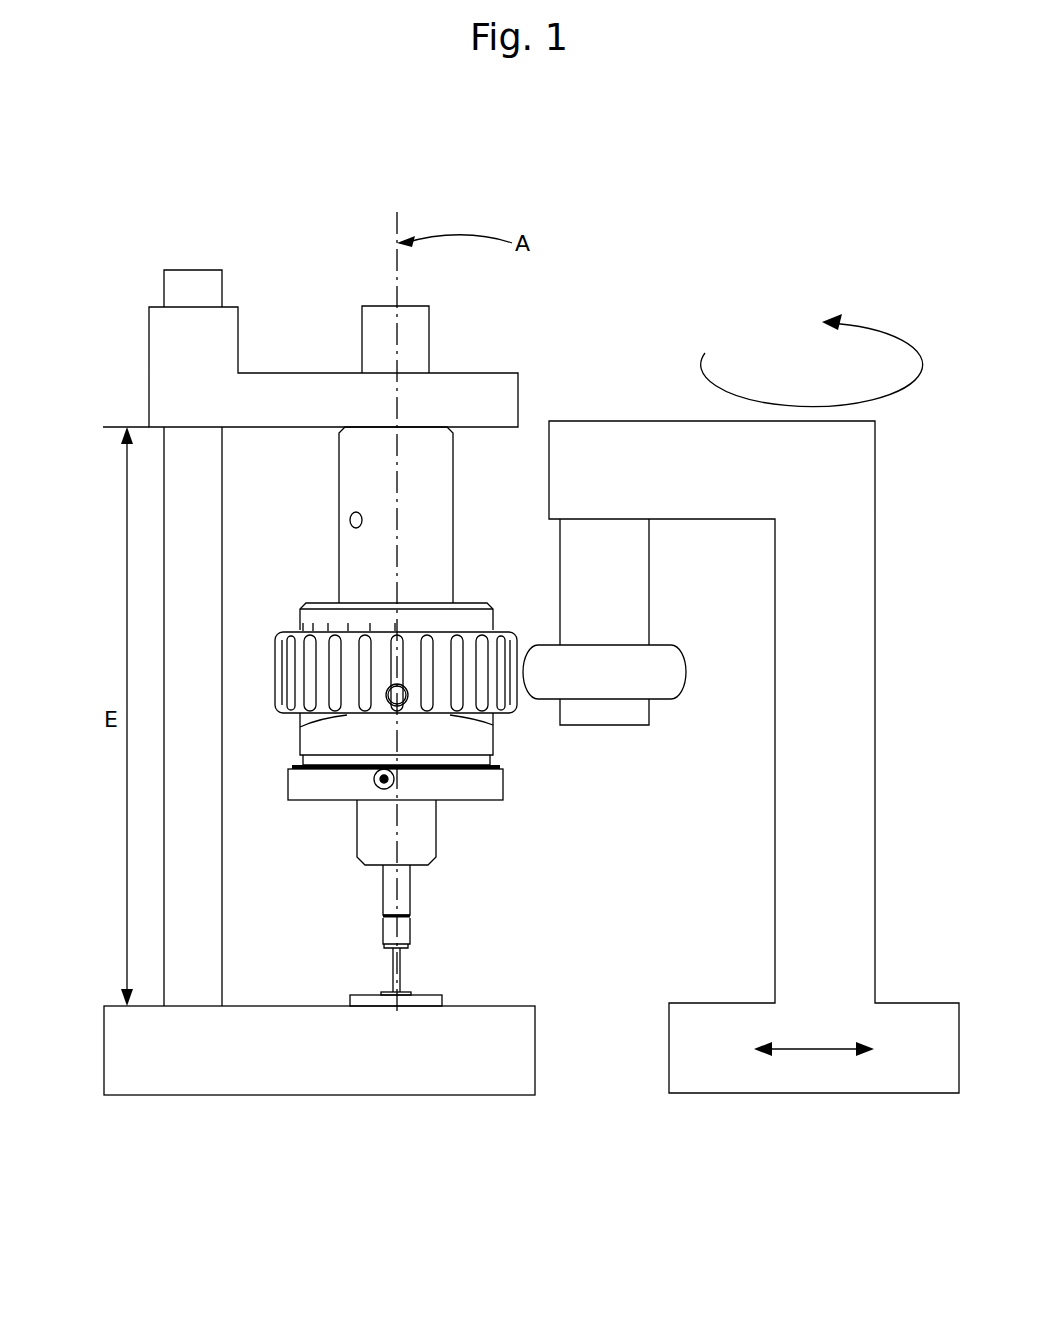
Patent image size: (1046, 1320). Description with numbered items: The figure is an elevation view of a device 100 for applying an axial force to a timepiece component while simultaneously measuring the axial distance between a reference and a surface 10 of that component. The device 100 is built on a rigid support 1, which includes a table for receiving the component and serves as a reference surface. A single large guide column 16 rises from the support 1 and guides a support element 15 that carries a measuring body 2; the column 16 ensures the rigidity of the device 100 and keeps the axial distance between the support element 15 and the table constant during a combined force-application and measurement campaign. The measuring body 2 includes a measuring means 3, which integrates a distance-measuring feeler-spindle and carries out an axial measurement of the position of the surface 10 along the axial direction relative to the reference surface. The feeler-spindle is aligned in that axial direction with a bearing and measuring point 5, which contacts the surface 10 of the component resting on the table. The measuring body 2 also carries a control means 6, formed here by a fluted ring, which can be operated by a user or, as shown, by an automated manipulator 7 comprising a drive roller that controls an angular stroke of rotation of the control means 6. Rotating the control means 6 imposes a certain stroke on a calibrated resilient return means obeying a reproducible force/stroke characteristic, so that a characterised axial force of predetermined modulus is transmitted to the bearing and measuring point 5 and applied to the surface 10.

The support 1 is at (293, 1055).
The measuring body 2 is at (440, 540).
The measuring means 3 is at (440, 905).
The bearing and measuring point 5 is at (400, 970).
The control means 6 is at (323, 690).
The automated manipulator 7 is at (672, 676).
The surface 10 is at (385, 985).
The support element 15 is at (287, 390).
The guide column 16 is at (186, 900).
The device 100 is at (158, 515).